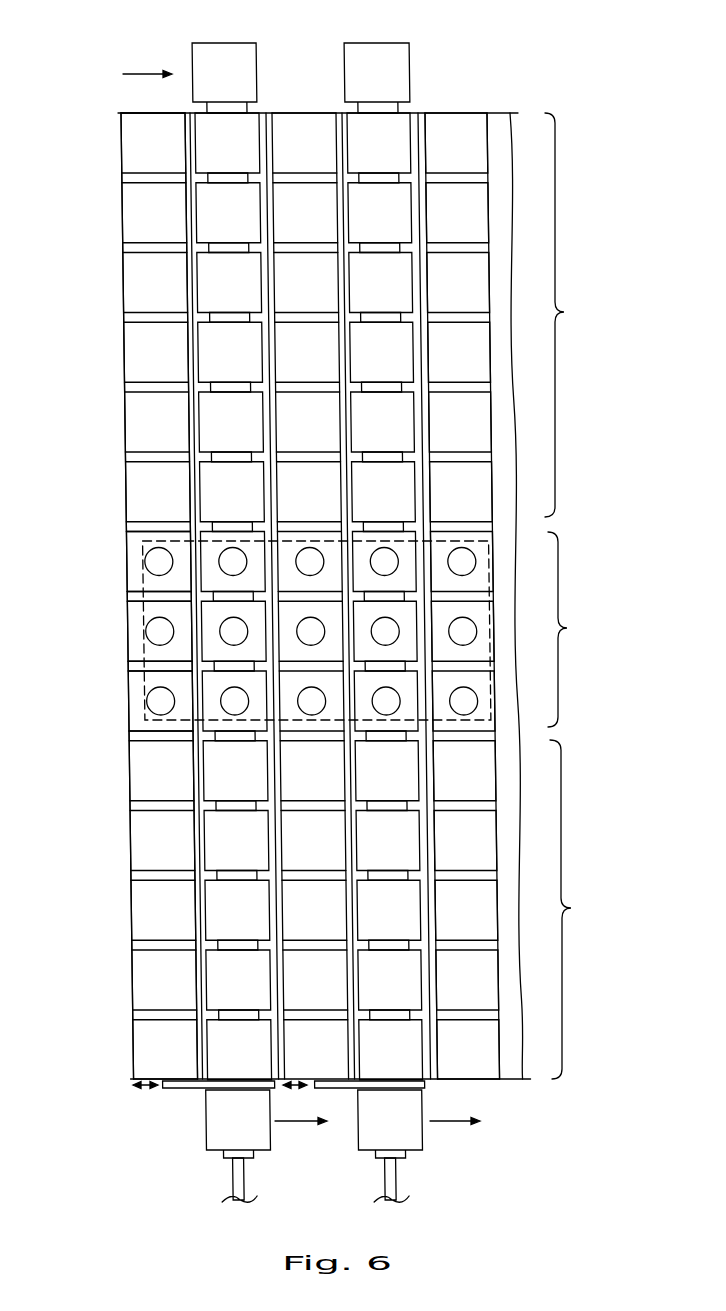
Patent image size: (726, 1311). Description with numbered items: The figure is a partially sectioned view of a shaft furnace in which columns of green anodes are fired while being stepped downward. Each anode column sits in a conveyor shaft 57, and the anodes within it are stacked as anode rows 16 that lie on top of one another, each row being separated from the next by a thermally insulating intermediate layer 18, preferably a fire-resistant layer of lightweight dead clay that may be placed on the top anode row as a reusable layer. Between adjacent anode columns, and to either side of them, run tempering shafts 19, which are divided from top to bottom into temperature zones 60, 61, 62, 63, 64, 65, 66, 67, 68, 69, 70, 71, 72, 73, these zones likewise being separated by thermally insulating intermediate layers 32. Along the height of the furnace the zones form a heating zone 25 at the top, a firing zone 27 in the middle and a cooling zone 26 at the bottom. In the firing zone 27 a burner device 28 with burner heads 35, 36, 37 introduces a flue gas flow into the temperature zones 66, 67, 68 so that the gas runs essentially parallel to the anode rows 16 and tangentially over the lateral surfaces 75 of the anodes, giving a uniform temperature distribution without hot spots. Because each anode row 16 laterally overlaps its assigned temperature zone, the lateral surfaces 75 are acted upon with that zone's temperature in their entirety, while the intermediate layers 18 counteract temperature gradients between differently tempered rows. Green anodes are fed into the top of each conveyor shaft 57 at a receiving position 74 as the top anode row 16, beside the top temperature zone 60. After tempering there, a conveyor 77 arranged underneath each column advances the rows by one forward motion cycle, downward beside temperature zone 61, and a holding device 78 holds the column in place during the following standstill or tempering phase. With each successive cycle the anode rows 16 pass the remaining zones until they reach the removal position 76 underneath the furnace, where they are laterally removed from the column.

The anode row 16 is at (401, 125).
The thermally insulating intermediate layer 18 is at (217, 184).
The tempering shaft 19 is at (160, 56).
The heating zone 25 is at (567, 315).
The cooling zone 26 is at (572, 909).
The firing zone 27 is at (570, 629).
The burner device 28 is at (131, 716).
The thermally insulating intermediate layer 32 is at (122, 181).
The burner head 35 is at (137, 554).
The burner head 36 is at (141, 628).
The burner head 37 is at (141, 695).
The conveyor shaft 57 is at (267, 108).
The temperature zone 60 is at (445, 155).
The temperature zone 61 is at (445, 225).
The temperature zone 62 is at (445, 294).
The temperature zone 63 is at (445, 364).
The temperature zone 64 is at (445, 434).
The temperature zone 65 is at (445, 504).
The temperature zone 66 is at (484, 558).
The temperature zone 67 is at (484, 625).
The temperature zone 68 is at (484, 702).
The temperature zone 69 is at (445, 783).
The temperature zone 70 is at (445, 852).
The temperature zone 71 is at (445, 922).
The temperature zone 72 is at (445, 992).
The temperature zone 73 is at (445, 1062).
The receiving position 74 is at (527, 73).
The lateral surface 75 is at (411, 268).
The removal position 76 is at (525, 1115).
The conveyor 77 is at (232, 1174).
The holding device 78 is at (183, 1087).